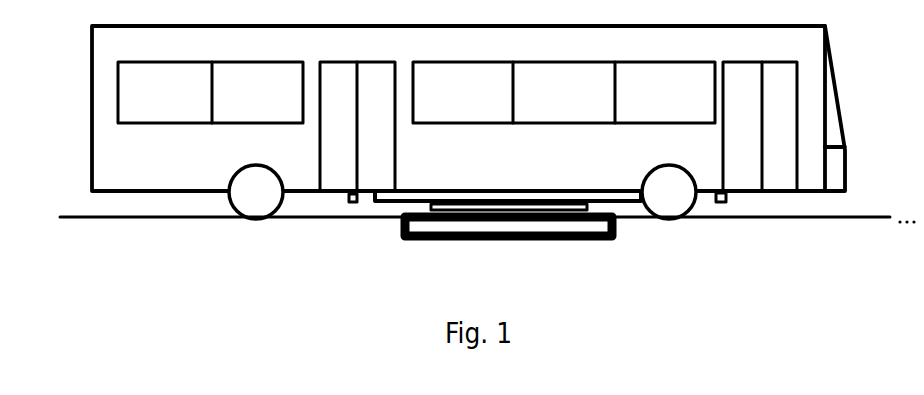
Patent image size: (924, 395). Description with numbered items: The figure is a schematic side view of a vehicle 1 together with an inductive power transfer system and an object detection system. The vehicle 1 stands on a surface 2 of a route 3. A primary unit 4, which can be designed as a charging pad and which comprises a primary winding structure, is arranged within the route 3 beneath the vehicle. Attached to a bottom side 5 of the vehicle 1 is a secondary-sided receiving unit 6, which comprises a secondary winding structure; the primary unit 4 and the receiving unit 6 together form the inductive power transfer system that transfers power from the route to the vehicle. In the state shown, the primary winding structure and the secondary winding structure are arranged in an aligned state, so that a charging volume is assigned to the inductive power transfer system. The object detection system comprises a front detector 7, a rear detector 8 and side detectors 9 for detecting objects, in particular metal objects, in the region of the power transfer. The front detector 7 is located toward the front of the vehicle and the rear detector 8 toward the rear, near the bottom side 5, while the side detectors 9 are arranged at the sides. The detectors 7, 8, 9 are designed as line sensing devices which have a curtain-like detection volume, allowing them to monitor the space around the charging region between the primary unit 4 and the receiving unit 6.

The vehicle 1 is at (807, 97).
The surface 2 is at (868, 218).
The route 3 is at (797, 318).
The primary unit 4 is at (542, 227).
The bottom side 5 is at (150, 192).
The secondary-sided receiving unit 6 is at (468, 212).
The front detector 7 is at (719, 203).
The rear detector 8 is at (352, 203).
The side detectors 9 is at (533, 192).